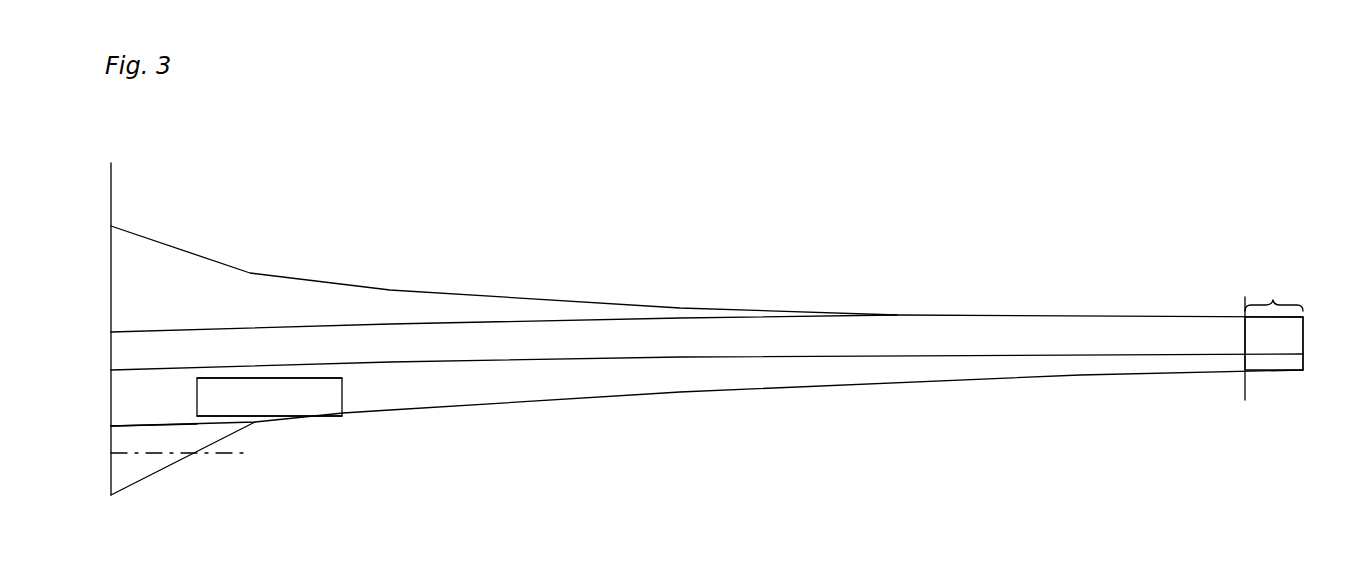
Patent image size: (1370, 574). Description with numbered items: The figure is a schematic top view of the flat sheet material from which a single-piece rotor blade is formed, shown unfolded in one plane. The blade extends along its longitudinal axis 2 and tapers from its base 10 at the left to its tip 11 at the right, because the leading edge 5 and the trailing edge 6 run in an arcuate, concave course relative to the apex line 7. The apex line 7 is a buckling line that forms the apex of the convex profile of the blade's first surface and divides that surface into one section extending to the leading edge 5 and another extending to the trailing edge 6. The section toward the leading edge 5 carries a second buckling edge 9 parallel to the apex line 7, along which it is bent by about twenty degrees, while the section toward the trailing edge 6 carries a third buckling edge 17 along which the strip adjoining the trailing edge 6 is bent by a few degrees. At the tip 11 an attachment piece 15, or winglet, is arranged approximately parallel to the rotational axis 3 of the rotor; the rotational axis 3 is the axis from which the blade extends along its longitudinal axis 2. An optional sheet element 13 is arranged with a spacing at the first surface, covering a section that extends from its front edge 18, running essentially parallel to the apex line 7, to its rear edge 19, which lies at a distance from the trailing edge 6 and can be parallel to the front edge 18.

The longitudinal axis 2 is at (1281, 337).
The rotational axis 3 is at (262, 453).
The leading edge 5 is at (287, 274).
The trailing edge 6 is at (382, 413).
The apex line 7 is at (418, 360).
The second buckling edge 9 is at (194, 329).
The base 10 is at (111, 226).
The tip 11 is at (1245, 290).
The sheet element 13 is at (292, 407).
The attachment piece 15 is at (1274, 297).
The third buckling edge 17 is at (172, 421).
The front edge 18 is at (319, 376).
The rear edge 19 is at (308, 416).